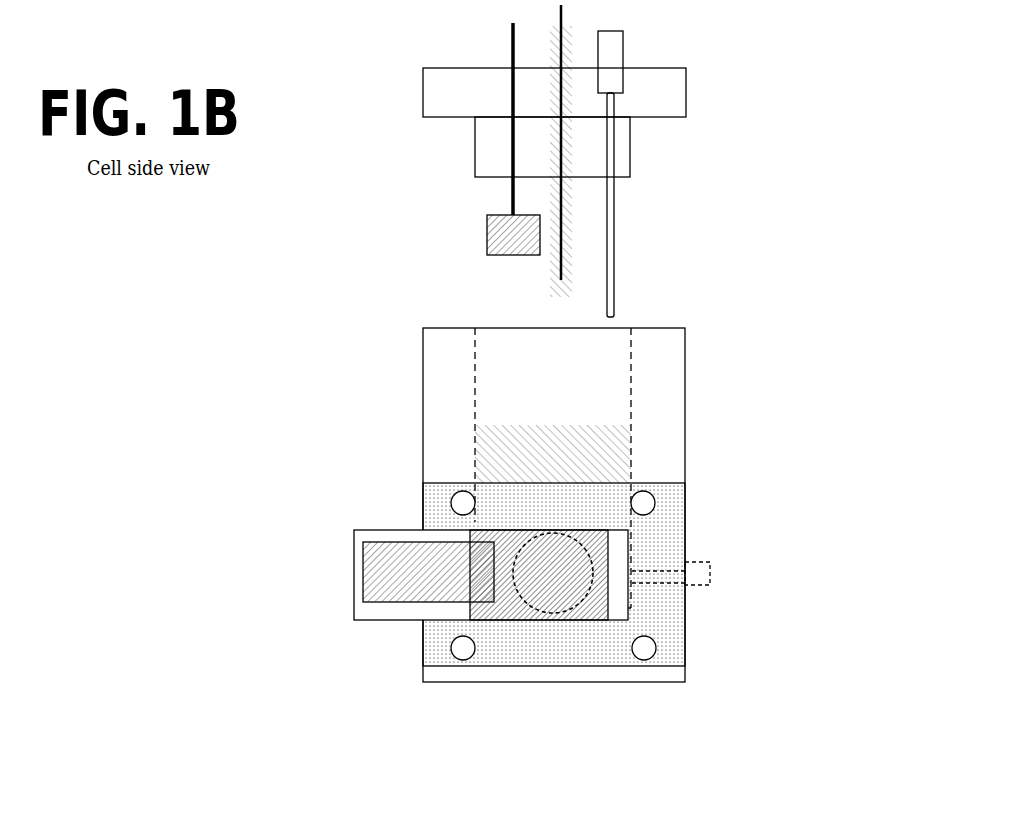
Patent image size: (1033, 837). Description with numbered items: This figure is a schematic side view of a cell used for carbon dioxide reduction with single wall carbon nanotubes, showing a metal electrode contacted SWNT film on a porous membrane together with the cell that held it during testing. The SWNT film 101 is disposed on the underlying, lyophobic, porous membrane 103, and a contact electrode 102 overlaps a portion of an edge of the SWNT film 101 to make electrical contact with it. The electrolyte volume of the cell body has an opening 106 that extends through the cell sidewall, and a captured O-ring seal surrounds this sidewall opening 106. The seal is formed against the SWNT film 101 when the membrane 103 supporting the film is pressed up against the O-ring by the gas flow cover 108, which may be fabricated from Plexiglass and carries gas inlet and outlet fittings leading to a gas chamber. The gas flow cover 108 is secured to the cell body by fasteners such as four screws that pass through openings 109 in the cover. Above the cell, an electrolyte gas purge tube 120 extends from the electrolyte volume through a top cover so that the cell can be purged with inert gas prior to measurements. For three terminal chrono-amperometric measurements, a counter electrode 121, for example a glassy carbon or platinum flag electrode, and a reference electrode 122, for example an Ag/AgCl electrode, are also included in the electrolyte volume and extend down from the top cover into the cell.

The SWNT film 101 is at (610, 555).
The contact electrode 102 is at (363, 550).
The porous membrane 103 is at (352, 613).
The opening 106 is at (623, 445).
The gas flow cover 108 is at (677, 632).
The openings 109 is at (660, 502).
The electrolyte gas purge tube 120 is at (624, 48).
The counter electrode 121 is at (485, 228).
The reference electrode 122 is at (550, 277).